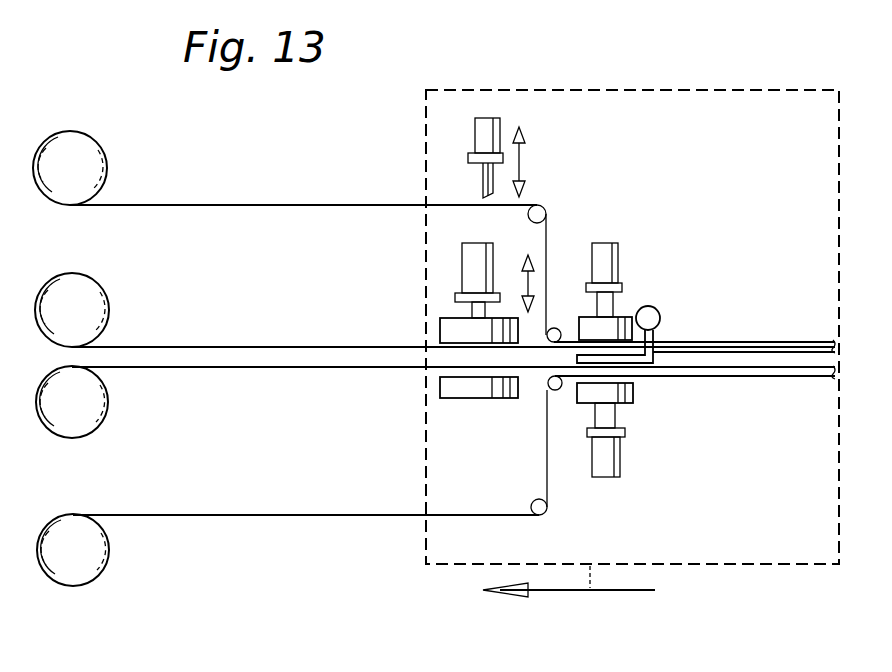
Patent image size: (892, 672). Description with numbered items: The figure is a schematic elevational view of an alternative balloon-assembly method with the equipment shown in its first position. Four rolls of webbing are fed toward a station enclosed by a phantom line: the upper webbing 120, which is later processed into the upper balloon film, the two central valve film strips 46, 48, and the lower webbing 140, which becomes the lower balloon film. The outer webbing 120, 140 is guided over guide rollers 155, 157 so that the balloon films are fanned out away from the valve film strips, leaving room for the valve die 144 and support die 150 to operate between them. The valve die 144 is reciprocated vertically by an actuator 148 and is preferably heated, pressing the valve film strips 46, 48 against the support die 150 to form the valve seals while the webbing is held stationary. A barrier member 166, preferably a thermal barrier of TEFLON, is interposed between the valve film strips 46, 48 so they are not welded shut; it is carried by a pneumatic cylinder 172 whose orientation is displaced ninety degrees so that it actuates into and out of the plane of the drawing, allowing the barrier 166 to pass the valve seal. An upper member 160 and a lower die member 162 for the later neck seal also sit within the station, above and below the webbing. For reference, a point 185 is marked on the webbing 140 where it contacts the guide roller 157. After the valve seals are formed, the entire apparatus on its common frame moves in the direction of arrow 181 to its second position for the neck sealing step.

The upper webbing 120 is at (172, 205).
The actuator 148 is at (492, 120).
The guide roller 155 is at (567, 328).
The valve die 144 is at (442, 318).
The valve film strip 46 is at (215, 347).
The upper right press roller 160 is at (625, 317).
The pneumatic cylinder 172 is at (656, 316).
The barrier member 166 is at (660, 363).
The valve film strip 48 is at (215, 367).
The support die 150 is at (463, 392).
The reference point of the webbing 185 is at (545, 386).
The guide roller 157 is at (546, 390).
The die member 162 is at (634, 402).
The lower webbing 140 is at (210, 515).
The arrow 181 is at (590, 590).